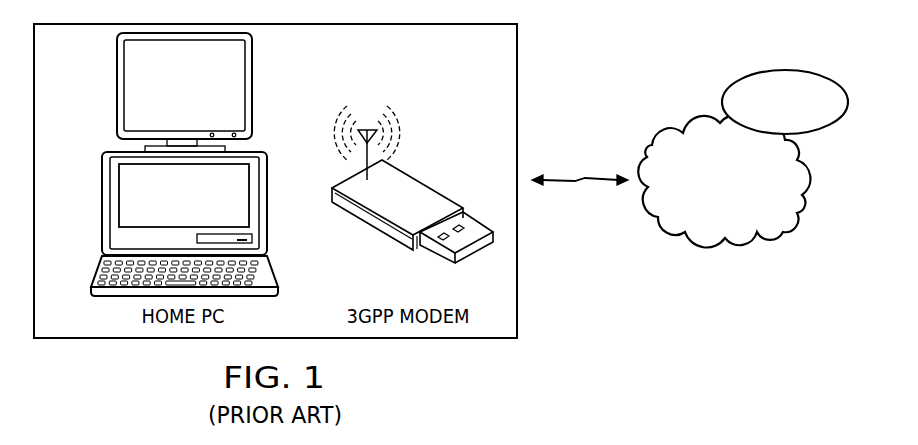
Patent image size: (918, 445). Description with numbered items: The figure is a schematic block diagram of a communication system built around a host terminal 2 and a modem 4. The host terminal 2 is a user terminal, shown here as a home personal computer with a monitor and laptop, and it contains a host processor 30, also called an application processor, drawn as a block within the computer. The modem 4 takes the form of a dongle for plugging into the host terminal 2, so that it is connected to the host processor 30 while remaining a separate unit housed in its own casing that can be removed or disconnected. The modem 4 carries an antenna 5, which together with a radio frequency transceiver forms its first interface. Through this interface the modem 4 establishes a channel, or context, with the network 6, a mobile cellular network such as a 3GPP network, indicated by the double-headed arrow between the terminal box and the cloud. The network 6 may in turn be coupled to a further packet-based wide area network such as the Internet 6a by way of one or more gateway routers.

The host terminal 2 is at (117, 87).
The host processor 30 is at (119, 195).
The modem 4 is at (373, 228).
The antenna 5 is at (402, 120).
The network 6 is at (722, 243).
The internet 6a is at (787, 70).